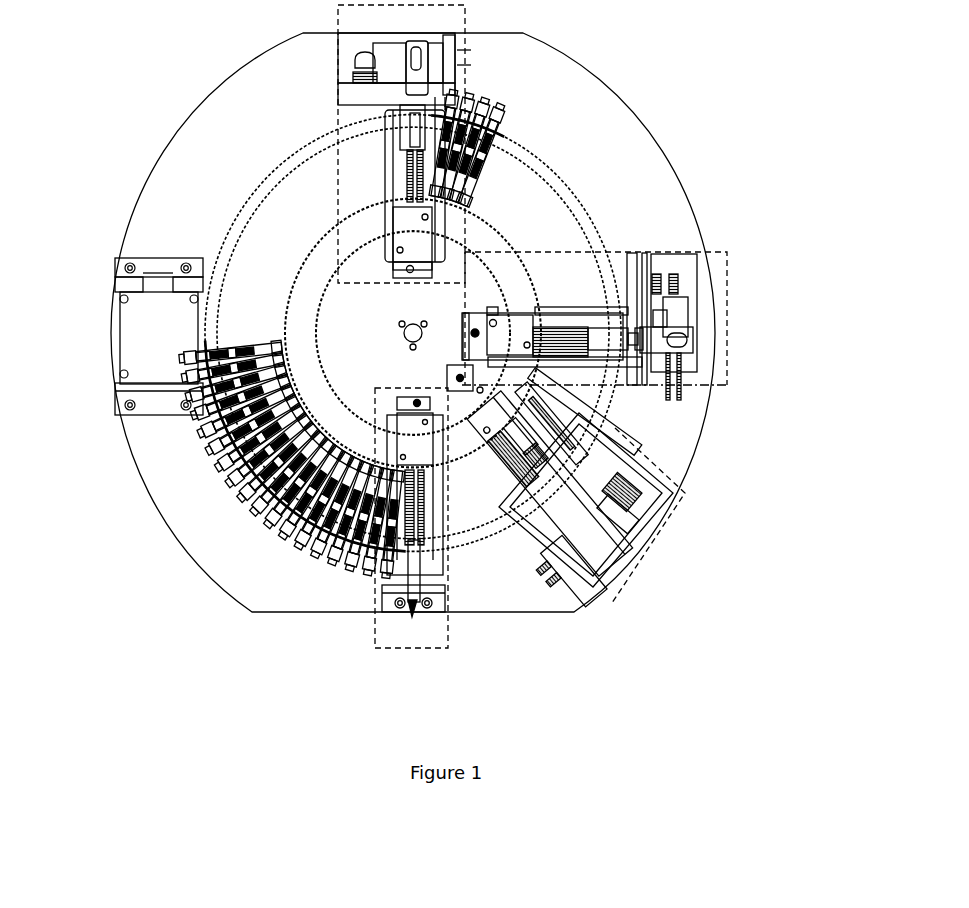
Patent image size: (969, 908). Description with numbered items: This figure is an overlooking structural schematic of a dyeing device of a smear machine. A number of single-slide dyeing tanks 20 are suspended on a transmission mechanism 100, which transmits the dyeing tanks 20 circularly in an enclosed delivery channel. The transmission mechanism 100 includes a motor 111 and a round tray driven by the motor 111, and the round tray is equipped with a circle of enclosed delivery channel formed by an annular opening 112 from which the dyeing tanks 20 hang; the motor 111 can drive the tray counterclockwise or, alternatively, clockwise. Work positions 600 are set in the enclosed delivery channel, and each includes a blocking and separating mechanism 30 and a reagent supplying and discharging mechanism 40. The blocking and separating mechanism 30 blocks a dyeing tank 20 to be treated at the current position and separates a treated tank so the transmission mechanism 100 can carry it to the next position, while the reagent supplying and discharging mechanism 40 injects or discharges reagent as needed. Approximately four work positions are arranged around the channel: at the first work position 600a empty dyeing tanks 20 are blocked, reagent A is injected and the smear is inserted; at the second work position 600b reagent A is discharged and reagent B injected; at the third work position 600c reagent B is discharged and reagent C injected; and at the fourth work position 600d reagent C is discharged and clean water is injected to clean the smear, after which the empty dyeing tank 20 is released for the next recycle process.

The transmission mechanism 100 is at (677, 177).
The motor 111 is at (143, 318).
The annular opening 112 is at (528, 185).
The dyeing tank 20 is at (293, 545).
The blocking and separating mechanism 30 is at (540, 602).
The reagent supplying and discharging mechanism 40 is at (417, 607).
The work positions 600 is at (366, 672).
The first work position 600a is at (469, 560).
The second work position 600b is at (638, 489).
The third work position 600c is at (713, 247).
The fourth work position 600d is at (337, 187).